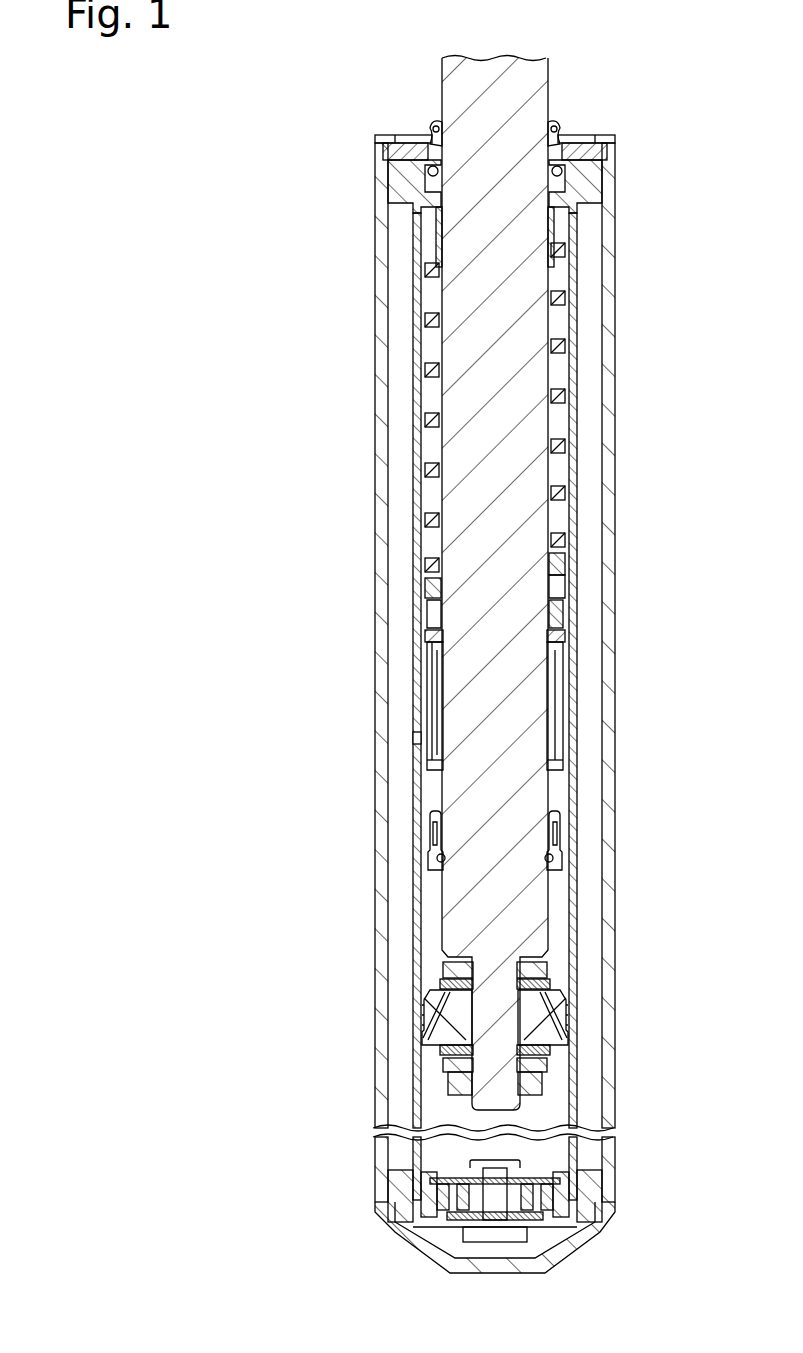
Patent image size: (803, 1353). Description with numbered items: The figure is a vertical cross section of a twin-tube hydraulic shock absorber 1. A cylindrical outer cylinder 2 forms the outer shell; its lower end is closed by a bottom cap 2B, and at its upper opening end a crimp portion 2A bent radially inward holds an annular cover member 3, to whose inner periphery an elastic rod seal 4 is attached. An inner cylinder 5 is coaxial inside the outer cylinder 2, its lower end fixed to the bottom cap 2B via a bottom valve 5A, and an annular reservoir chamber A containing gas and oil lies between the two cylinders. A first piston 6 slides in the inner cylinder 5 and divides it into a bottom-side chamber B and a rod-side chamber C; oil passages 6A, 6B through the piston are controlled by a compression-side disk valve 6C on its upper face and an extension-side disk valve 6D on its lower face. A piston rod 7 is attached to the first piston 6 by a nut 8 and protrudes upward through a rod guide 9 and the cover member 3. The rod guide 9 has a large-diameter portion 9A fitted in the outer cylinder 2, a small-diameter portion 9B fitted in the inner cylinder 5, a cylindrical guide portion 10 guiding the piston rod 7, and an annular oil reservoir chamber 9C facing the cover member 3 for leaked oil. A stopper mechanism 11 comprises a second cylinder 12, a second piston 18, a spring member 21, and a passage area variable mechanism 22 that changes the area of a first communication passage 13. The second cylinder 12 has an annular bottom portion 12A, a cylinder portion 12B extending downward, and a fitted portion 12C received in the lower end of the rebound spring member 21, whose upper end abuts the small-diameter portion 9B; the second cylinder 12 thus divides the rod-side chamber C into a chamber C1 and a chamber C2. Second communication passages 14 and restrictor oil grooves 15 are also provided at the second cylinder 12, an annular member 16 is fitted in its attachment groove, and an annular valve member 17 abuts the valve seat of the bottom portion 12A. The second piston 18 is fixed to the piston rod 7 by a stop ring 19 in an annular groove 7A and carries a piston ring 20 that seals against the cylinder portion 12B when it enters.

The hydraulic shock absorber 1 is at (338, 143).
The outer cylinder 2 is at (600, 410).
The crimp portion 2A is at (600, 137).
The bottom cap 2B is at (440, 1240).
The cover member 3 is at (576, 141).
The rod seal 4 is at (437, 122).
The inner cylinder 5 is at (417, 932).
The bottom valve 5A is at (562, 1195).
The first piston 6 is at (562, 1025).
The oil passage 6A is at (432, 1012).
The oil passage 6B is at (556, 995).
The compression-side disk valve 6C is at (450, 970).
The extension-side disk valve 6D is at (543, 1050).
The piston rod 7 is at (465, 452).
The annular groove 7A is at (551, 858).
The nut 8 is at (455, 1088).
The rod guide 9 is at (596, 190).
The large-diameter portion 9A is at (390, 185).
The small-diameter portion 9B is at (588, 243).
The oil reservoir chamber 9C is at (398, 145).
The guide portion 10 is at (432, 232).
The stopper mechanism 11 is at (580, 665).
The second cylinder 12 is at (435, 619).
The bottom portion 12A is at (565, 606).
The cylinder portion 12B is at (566, 723).
The fitted portion 12C is at (562, 560).
The first communication passage 13 is at (435, 675).
The second communication passage 14 is at (432, 712).
The restrictor oil groove 15 is at (416, 739).
The annular member 16 is at (435, 640).
The annular valve member 17 is at (563, 626).
The second piston 18 is at (437, 818).
The stop ring 19 is at (443, 858).
The piston ring 20 is at (555, 826).
The spring member 21 is at (428, 378).
The passage area variable mechanism 22 is at (428, 582).
The reservoir chamber A is at (590, 456).
The bottom-side chamber B is at (546, 1100).
The rod-side chamber C is at (556, 795).
The chamber C1 is at (558, 936).
The chamber C2 is at (562, 378).